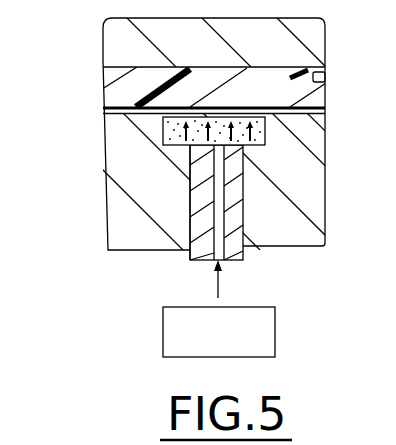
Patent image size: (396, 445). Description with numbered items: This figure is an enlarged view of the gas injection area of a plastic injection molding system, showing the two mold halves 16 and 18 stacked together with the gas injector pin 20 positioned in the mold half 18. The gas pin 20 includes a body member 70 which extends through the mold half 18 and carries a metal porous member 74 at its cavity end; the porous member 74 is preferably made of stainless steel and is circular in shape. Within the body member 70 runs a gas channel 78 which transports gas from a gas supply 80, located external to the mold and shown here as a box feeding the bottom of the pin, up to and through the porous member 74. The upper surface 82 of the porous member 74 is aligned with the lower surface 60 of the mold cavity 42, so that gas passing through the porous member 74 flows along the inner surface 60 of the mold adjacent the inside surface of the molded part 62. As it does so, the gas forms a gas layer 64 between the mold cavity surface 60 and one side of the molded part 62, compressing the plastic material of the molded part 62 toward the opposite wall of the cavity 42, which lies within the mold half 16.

The mold half 16 is at (104, 33).
The mold half 18 is at (103, 190).
The gas injector pin 20 is at (190, 195).
The mold cavity 42 is at (318, 78).
The inner surface of the mold 60 is at (305, 121).
The molded part 62 is at (108, 72).
The gas layer 64 is at (105, 110).
The body member 70 is at (243, 225).
The metal porous member 74 is at (265, 136).
The gas channel 78 is at (223, 182).
The gas supply 80 is at (277, 325).
The upper surface 82 is at (238, 117).